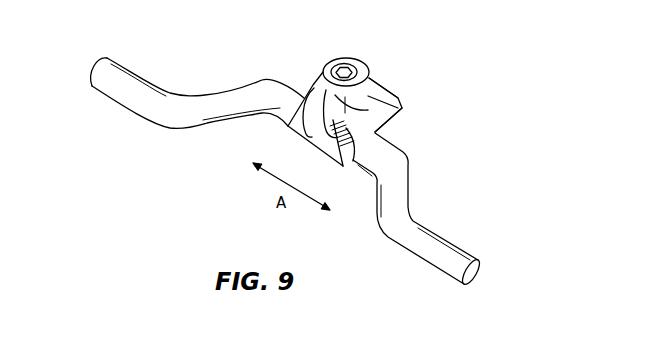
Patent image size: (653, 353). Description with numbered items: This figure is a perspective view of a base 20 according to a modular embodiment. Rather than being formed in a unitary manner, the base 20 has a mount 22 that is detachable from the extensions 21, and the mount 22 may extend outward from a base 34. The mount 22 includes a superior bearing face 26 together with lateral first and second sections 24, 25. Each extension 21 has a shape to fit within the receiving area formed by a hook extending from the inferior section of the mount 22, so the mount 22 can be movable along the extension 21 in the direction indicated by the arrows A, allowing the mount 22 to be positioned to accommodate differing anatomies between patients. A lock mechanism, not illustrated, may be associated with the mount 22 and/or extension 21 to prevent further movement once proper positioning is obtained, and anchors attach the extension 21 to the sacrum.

The base 20 is at (428, 53).
The extension 21 is at (122, 90).
The mount 22 is at (352, 50).
The first section 24 is at (369, 92).
The second section 25 is at (323, 63).
The superior bearing face 26 is at (365, 62).
The base 34 is at (383, 113).